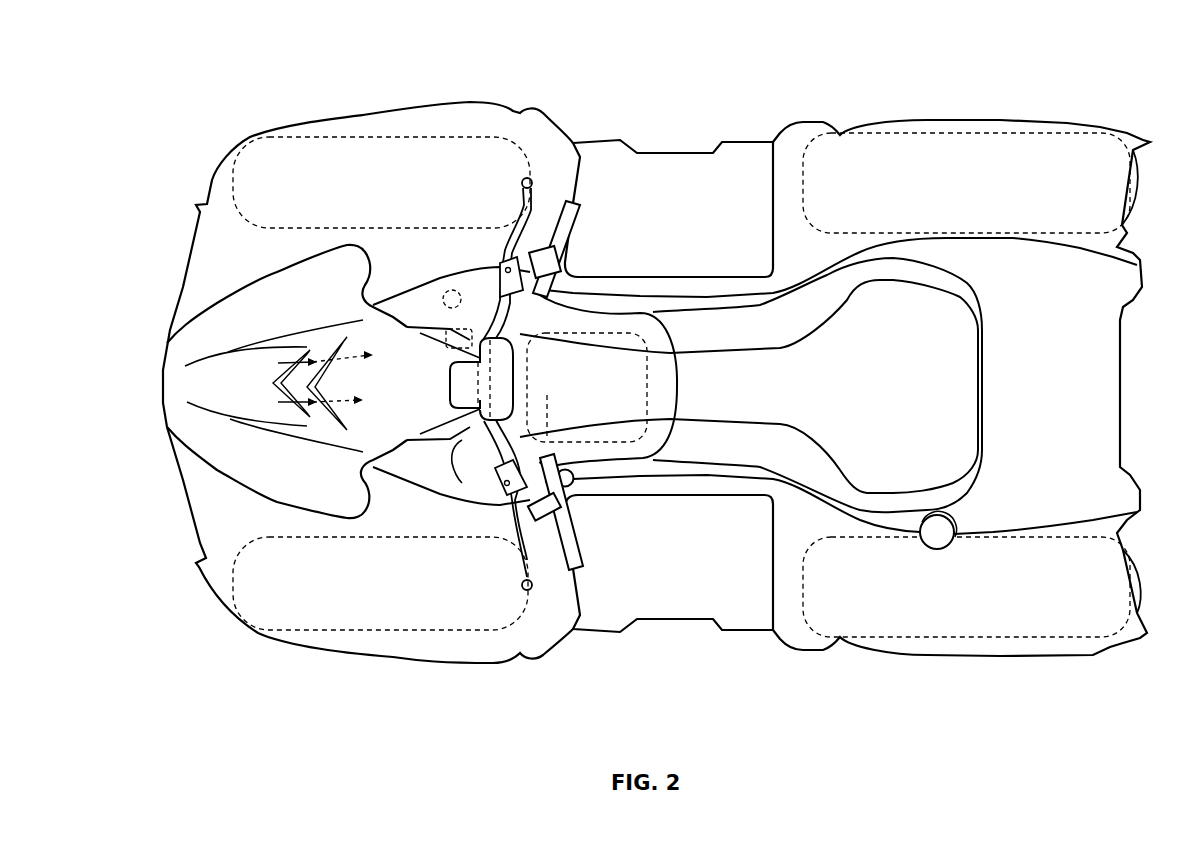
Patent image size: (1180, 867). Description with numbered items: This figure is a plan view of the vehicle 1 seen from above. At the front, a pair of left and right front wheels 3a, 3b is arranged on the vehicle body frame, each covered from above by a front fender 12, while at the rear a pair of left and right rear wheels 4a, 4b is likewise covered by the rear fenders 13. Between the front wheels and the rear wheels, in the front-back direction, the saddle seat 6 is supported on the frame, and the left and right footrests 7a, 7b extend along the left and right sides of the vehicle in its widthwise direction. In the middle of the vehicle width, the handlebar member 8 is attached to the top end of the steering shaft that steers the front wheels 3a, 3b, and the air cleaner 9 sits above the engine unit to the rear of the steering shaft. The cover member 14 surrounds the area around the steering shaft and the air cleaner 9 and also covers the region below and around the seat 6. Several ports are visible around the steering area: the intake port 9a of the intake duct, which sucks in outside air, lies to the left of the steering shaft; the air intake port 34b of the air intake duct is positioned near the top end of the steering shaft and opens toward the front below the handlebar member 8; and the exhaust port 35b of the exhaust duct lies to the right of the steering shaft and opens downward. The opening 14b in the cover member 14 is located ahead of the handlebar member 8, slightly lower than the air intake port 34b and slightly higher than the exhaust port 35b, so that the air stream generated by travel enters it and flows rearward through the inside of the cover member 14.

The vehicle 1 is at (688, 76).
The left front wheel 3a is at (307, 633).
The right front wheel 3b is at (307, 138).
The left rear wheel 4a is at (1007, 637).
The right rear wheel 4b is at (1013, 130).
The saddle seat 6 is at (943, 343).
The left footrest 7a is at (673, 602).
The right footrest 7b is at (673, 167).
The handlebar member 8 is at (580, 217).
The air cleaner 9 is at (650, 387).
The intake port 9a is at (553, 455).
The front fender 12 is at (433, 103).
The rear fender 13 is at (903, 123).
The cover member 14 is at (383, 423).
The opening 14b is at (323, 417).
The air intake port 34b is at (447, 344).
The exhaust port 35b is at (444, 292).